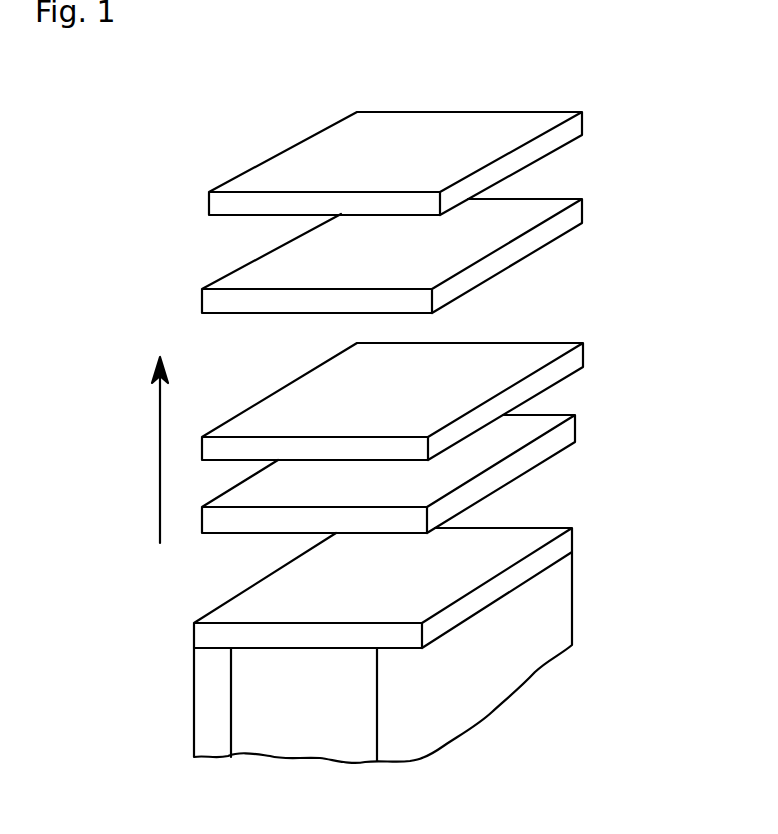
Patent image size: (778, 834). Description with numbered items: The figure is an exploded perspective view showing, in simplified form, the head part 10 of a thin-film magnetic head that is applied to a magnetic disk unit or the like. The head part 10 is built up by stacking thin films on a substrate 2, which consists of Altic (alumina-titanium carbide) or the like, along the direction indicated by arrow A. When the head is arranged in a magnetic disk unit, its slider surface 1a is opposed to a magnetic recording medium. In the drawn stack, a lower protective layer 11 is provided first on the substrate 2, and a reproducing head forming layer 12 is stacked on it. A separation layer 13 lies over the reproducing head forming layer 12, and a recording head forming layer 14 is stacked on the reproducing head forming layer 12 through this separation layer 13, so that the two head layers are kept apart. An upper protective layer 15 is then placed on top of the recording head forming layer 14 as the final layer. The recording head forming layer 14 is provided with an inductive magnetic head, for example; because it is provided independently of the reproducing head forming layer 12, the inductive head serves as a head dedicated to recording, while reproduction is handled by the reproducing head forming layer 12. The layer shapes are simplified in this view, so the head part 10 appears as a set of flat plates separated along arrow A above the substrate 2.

The upper protective layer 15 is at (572, 128).
The recording head forming layer 14 is at (570, 220).
The separation layer 13 is at (577, 360).
The reproducing head forming layer 12 is at (570, 435).
The lower protective layer 11 is at (563, 543).
The head part 10 is at (667, 536).
The slider surface 1a is at (572, 600).
The substrate 2 is at (297, 742).
The arrow A is at (158, 458).